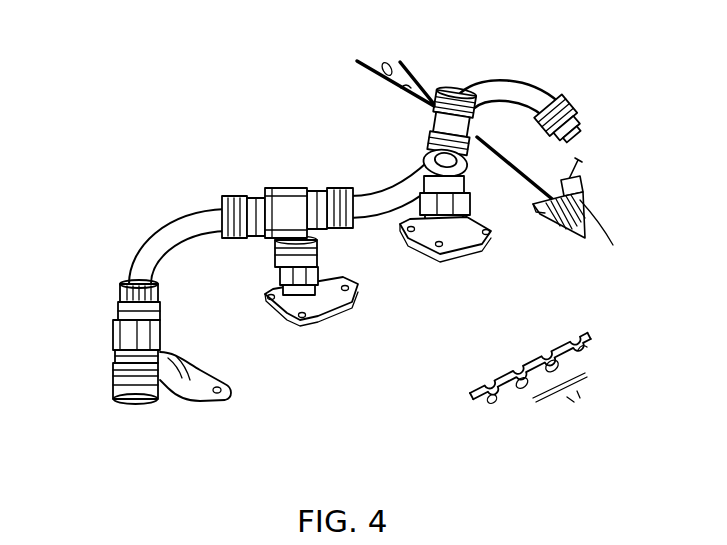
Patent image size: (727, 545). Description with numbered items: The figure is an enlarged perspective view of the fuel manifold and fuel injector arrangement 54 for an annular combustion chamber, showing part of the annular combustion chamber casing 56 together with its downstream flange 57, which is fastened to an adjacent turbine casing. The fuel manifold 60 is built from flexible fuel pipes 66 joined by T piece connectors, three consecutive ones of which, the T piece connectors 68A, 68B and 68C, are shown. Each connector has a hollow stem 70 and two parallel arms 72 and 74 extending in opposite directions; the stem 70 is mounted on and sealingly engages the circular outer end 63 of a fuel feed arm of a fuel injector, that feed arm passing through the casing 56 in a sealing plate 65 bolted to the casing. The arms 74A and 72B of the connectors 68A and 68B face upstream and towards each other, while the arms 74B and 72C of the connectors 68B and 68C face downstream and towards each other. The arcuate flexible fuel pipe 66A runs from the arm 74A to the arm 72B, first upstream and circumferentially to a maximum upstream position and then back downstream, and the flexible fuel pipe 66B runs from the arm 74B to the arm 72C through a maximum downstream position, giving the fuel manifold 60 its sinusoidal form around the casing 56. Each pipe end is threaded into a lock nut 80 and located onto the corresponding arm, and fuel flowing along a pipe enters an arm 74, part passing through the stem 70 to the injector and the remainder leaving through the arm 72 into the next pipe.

The fuel manifold and fuel injector arrangement 54 is at (551, 82).
The annular combustion chamber casing 56 is at (377, 96).
The flange 57 is at (568, 362).
The fuel manifold 60 is at (517, 84).
The outer end of fuel feed arm 63 is at (488, 225).
The sealing plate 65 is at (289, 322).
The flexible fuel pipe 66 is at (483, 90).
The flexible fuel pipe 66A is at (380, 198).
The flexible fuel pipe 66B is at (170, 234).
The T piece connector 68A is at (465, 161).
The T piece connector 68B is at (303, 286).
The T piece connector 68C is at (193, 400).
The stem 70 is at (162, 402).
The arm 72 is at (472, 116).
The arm 72B is at (310, 192).
The arm 72C is at (162, 314).
The arm 74 is at (114, 364).
The arm 74A is at (580, 184).
The arm 74B is at (262, 196).
The lock nut 80 is at (120, 294).